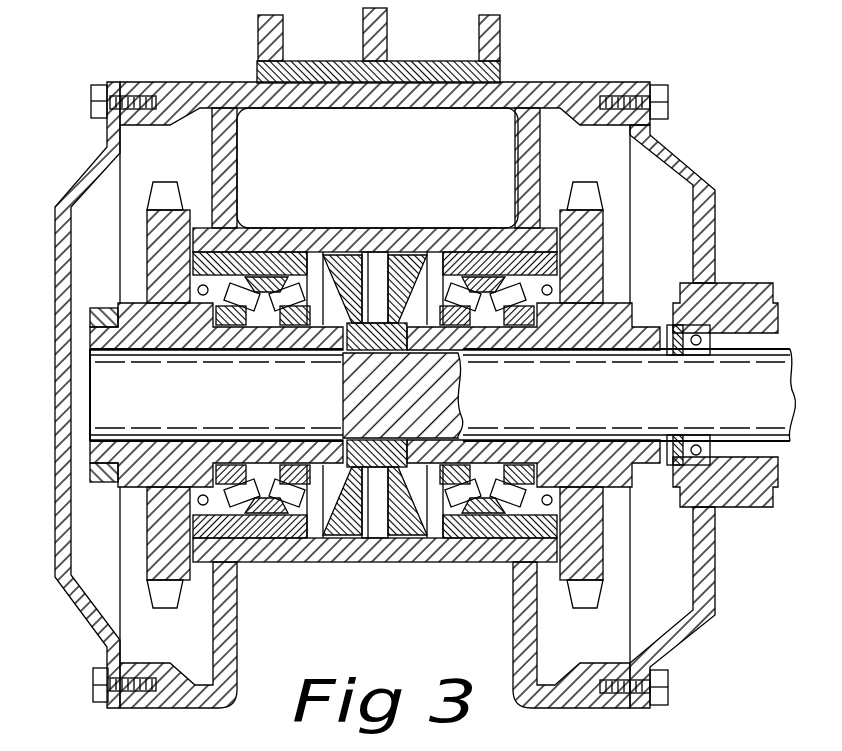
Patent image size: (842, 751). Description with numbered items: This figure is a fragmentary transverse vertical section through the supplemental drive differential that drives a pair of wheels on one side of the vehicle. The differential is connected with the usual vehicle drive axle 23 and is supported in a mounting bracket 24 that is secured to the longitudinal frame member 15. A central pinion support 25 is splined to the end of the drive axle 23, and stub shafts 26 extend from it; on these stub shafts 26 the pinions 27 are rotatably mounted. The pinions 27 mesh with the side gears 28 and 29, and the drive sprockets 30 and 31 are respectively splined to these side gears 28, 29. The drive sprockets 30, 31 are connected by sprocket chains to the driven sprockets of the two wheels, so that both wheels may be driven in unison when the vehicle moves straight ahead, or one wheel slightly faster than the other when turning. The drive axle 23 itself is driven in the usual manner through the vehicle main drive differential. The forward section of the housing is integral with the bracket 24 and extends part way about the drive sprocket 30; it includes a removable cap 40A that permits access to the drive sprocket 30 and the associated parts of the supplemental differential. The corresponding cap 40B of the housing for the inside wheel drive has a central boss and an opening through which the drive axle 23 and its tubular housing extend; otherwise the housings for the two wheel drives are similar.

The longitudinal frame member 15 is at (305, 68).
The vehicle drive axle 23 is at (443, 395).
The mounting bracket 24 is at (170, 92).
The central pinion support 25 is at (343, 353).
The stub shafts 26 is at (377, 268).
The pinions 27 is at (330, 326).
The side gear 28 is at (213, 342).
The side gear 29 is at (573, 338).
The drive sprocket 30 is at (175, 227).
The drive sprocket 31 is at (607, 245).
The removable cap 40A is at (63, 457).
The cap 40B is at (712, 240).